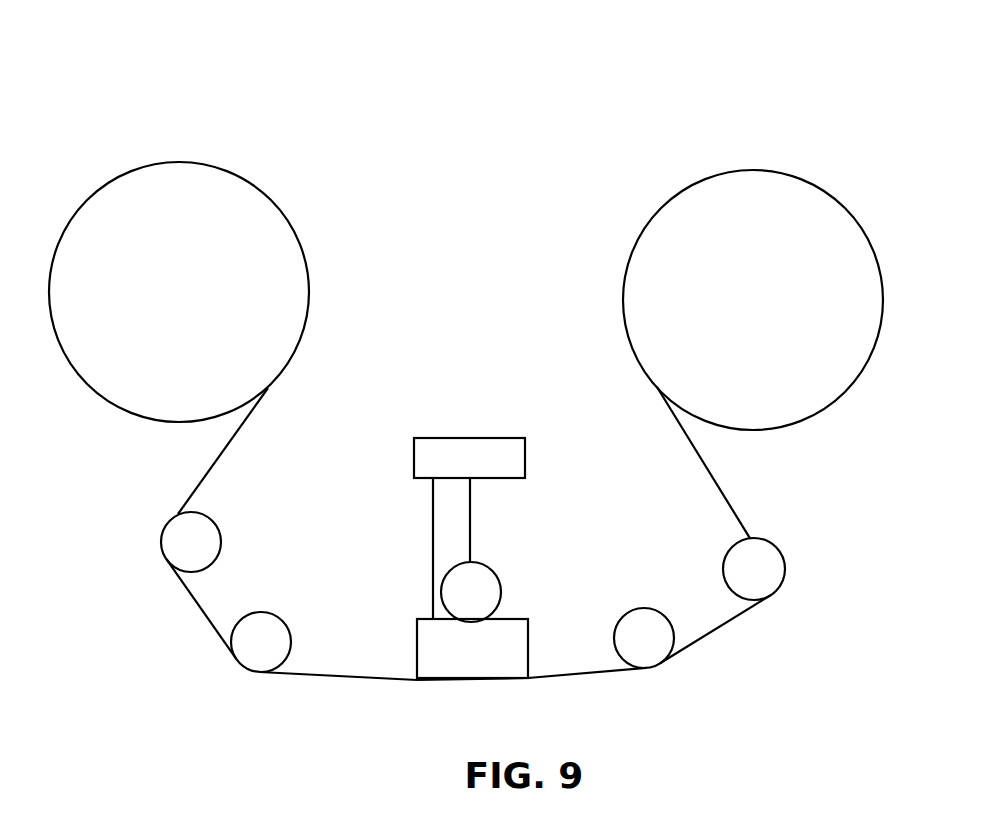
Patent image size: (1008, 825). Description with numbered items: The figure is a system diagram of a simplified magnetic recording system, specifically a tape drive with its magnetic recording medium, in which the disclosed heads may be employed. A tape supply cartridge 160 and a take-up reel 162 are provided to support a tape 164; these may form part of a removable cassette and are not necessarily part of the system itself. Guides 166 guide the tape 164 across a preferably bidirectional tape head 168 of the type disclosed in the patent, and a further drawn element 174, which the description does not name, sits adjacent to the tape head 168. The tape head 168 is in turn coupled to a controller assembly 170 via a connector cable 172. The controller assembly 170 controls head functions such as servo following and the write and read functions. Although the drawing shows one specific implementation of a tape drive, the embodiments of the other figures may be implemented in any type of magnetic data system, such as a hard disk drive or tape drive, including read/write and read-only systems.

The tape supply cartridge 160 is at (177, 163).
The take-up reel 162 is at (752, 170).
The tape 164 is at (340, 675).
The guides 166 is at (220, 535).
The tape head 168 is at (530, 647).
The controller assembly 170 is at (468, 437).
The connector cable 172 is at (433, 588).
The pressure roller 174 is at (492, 570).